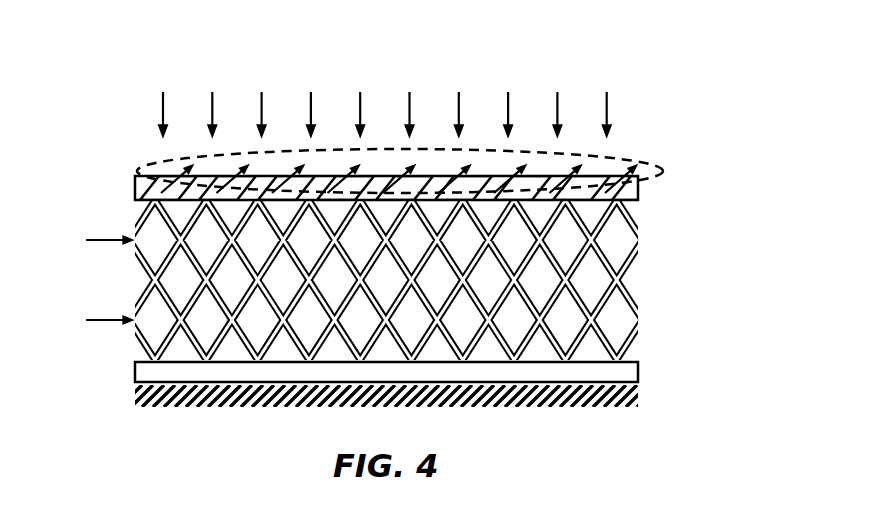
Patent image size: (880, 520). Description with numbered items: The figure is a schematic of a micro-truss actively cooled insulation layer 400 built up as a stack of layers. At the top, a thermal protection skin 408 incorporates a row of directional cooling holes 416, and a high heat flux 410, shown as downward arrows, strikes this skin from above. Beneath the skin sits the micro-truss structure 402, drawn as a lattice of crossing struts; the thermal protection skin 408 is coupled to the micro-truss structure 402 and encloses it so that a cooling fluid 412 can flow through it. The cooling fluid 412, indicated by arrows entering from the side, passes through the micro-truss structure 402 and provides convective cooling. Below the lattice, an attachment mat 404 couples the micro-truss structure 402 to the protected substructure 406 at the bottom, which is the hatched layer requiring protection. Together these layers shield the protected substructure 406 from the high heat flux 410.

The micro-truss actively cooled insulation layer 400 is at (142, 32).
The micro-truss structure 402 is at (640, 283).
The attachment mat 404 is at (640, 371).
The protected substructure 406 is at (640, 387).
The thermal protection skin 408 is at (640, 190).
The high heat flux 410 is at (163, 110).
The cooling fluid 412 is at (111, 318).
The directional cooling holes 416 is at (633, 160).